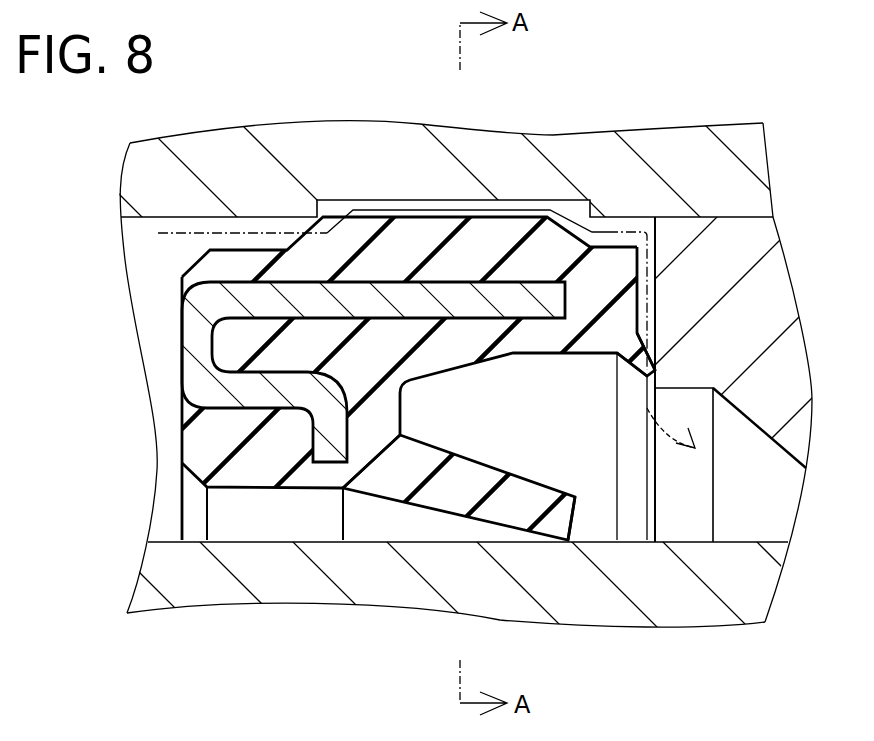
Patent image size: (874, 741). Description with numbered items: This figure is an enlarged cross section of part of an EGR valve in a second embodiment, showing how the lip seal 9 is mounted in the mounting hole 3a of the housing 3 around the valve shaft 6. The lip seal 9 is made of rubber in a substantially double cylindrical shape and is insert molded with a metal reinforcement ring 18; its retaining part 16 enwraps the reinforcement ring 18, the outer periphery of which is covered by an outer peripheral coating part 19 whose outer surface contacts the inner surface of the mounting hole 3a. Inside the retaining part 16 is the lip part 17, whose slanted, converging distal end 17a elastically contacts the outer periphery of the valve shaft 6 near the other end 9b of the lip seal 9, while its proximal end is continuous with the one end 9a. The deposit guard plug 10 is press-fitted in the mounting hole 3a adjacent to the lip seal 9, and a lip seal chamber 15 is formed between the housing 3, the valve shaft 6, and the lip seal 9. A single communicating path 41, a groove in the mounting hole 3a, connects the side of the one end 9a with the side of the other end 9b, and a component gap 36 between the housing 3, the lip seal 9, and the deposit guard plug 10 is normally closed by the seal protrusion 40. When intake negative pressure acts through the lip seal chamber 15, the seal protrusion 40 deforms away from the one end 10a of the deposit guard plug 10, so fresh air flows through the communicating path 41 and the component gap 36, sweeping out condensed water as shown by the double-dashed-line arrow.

The housing 3 is at (150, 175).
The mounting hole 3a is at (160, 233).
The valve shaft 6 is at (167, 570).
The lip seal 9 is at (437, 352).
The one end 9a is at (182, 415).
The other end 9b is at (622, 316).
The deposit guard plug 10 is at (748, 260).
The one end 10a is at (655, 542).
The lip seal chamber 15 is at (555, 414).
The retaining part 16 is at (492, 215).
The lip part 17 is at (463, 475).
The distal end 17a is at (577, 523).
The reinforcement ring 18 is at (297, 300).
The outer peripheral coating part 19 is at (400, 247).
The component gap 36 is at (624, 232).
The seal protrusion 40 is at (657, 363).
The communicating path 41 is at (533, 212).